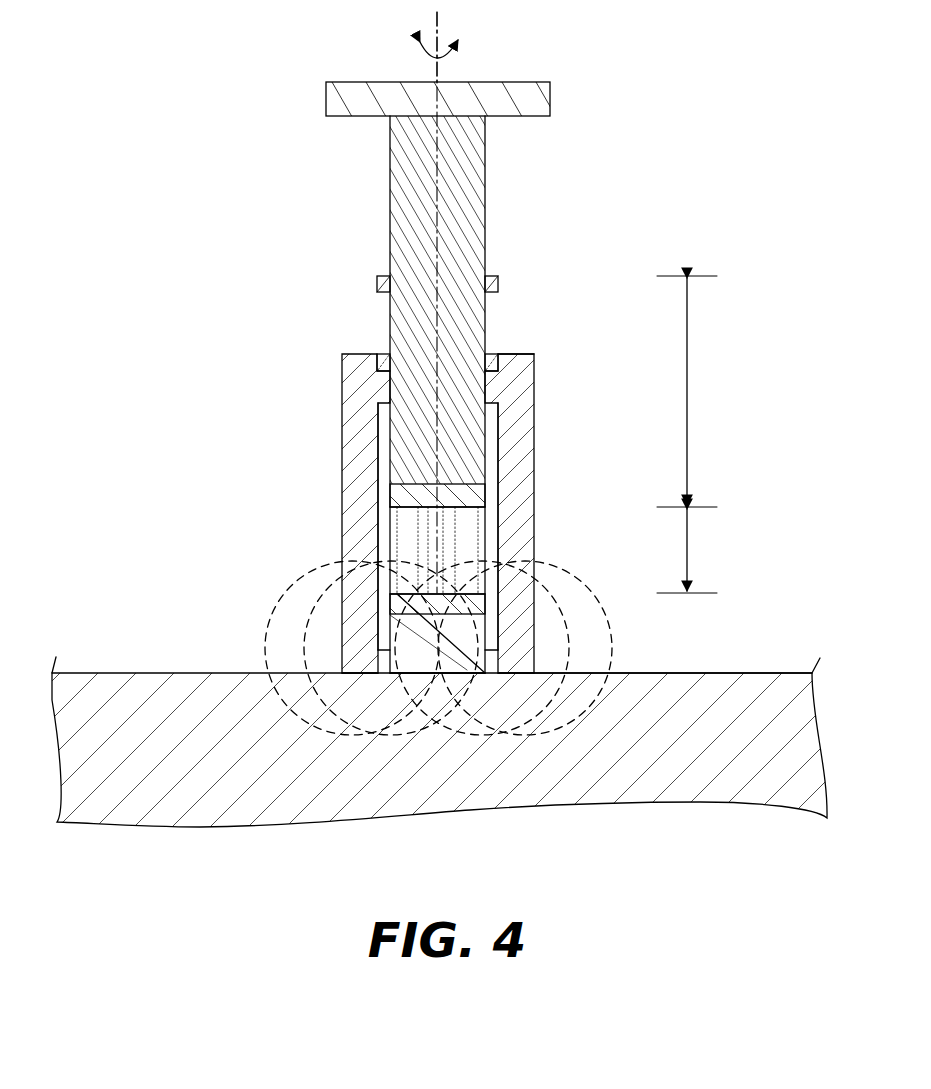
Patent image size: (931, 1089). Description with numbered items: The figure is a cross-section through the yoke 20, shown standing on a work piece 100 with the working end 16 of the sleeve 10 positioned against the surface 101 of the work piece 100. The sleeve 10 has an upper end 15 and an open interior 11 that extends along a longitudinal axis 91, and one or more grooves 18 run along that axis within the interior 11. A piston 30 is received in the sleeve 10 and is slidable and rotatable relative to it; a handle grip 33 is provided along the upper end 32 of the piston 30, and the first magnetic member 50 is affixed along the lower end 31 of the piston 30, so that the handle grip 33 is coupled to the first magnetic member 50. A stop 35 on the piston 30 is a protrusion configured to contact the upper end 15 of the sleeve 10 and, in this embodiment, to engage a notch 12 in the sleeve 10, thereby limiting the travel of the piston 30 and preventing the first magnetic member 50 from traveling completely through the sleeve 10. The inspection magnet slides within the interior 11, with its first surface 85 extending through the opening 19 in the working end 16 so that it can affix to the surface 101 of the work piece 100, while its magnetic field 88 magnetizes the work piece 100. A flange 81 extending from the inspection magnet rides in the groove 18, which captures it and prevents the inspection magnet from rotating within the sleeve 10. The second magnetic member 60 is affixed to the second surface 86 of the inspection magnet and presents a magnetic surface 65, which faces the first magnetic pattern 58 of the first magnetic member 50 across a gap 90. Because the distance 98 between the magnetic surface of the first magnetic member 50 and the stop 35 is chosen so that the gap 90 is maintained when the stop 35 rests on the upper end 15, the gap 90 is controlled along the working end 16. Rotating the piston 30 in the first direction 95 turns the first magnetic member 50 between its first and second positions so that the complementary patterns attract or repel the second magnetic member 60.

The sleeve 10 is at (525, 385).
The open interior 11 is at (458, 553).
The notch 12 is at (382, 355).
The upper end 15 is at (517, 353).
The working end 16 is at (355, 670).
The groove 18 is at (378, 500).
The opening 19 is at (441, 674).
The yoke 20 is at (645, 250).
The piston 30 is at (485, 308).
The lower end 31 is at (460, 437).
The upper end 32 is at (475, 143).
The handle grip 33 is at (530, 97).
The stop 35 is at (377, 282).
The first magnetic member 50 is at (460, 492).
The first magnetic pattern 58 is at (410, 513).
The second magnetic member 60 is at (488, 600).
The magnetic surface 65 is at (447, 592).
The flange 81 is at (490, 625).
The first surface 85 is at (463, 675).
The second surface 86 is at (418, 617).
The magnetic field 88 is at (285, 597).
The gap 90 is at (688, 552).
The longitudinal axis 91 is at (435, 72).
The first direction 95 is at (456, 50).
The distance 98 is at (688, 390).
The work piece 100 is at (752, 680).
The surface 101 is at (715, 672).